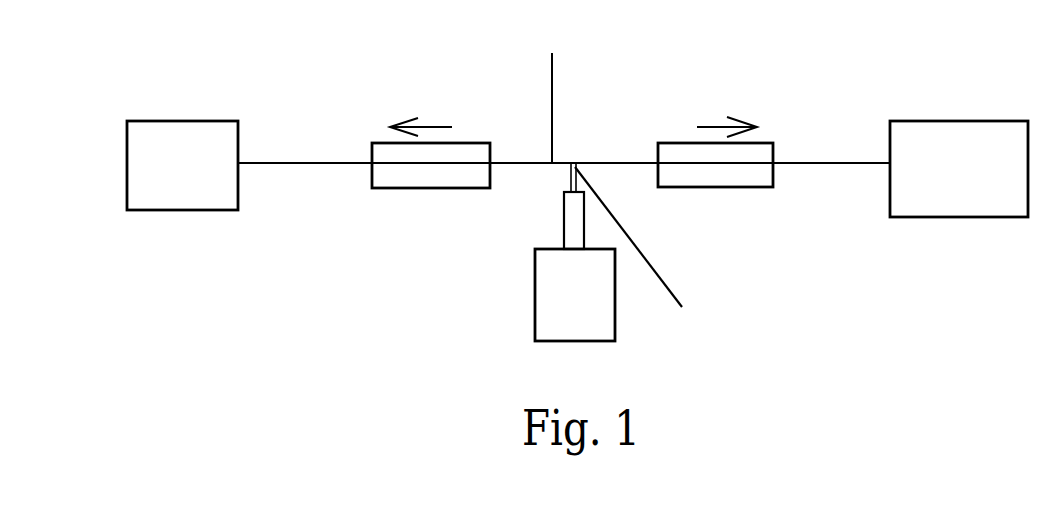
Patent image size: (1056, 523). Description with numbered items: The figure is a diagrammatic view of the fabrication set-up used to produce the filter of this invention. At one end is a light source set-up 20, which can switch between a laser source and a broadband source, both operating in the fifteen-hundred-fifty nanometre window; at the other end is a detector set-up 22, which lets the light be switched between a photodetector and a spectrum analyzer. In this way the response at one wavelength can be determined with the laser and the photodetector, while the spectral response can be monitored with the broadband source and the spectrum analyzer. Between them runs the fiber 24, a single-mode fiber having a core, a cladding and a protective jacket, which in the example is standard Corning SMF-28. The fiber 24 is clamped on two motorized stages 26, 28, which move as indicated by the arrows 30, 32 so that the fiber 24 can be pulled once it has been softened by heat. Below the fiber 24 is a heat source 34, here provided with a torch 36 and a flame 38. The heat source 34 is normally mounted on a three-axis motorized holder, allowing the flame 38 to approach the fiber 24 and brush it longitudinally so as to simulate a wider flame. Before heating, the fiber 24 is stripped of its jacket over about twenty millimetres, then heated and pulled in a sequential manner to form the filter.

The light source set-up 20 is at (209, 191).
The detector set-up 22 is at (973, 197).
The fiber 24 is at (551, 86).
The motorized stage 26 is at (435, 176).
The motorized stage 28 is at (705, 175).
The arrow 30 is at (430, 127).
The arrow 32 is at (711, 127).
The heat source 34 is at (553, 298).
The torch 36 is at (572, 212).
The flame 38 is at (641, 260).